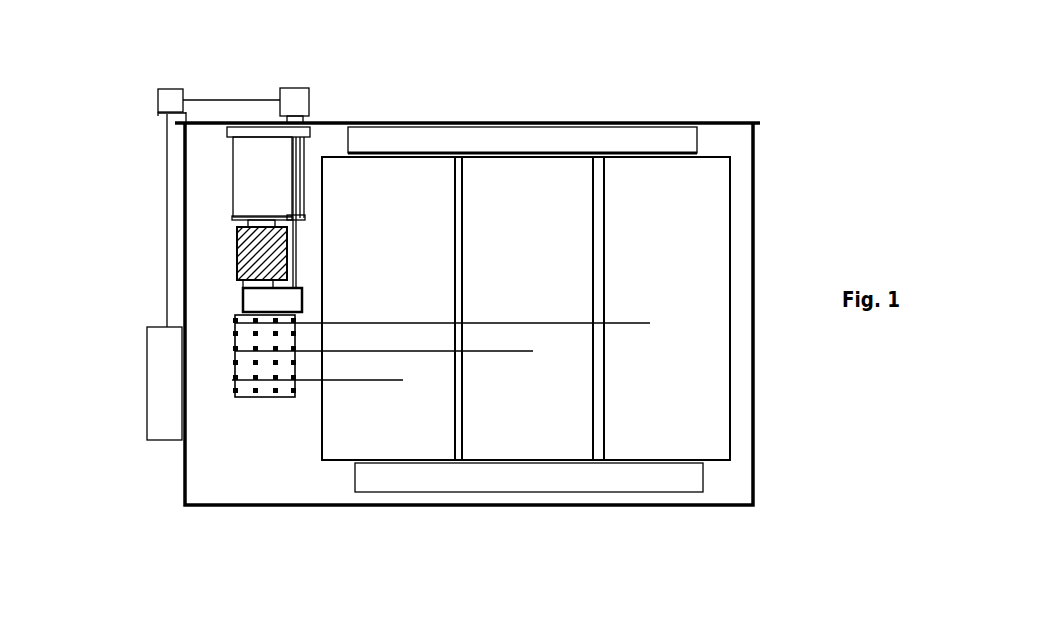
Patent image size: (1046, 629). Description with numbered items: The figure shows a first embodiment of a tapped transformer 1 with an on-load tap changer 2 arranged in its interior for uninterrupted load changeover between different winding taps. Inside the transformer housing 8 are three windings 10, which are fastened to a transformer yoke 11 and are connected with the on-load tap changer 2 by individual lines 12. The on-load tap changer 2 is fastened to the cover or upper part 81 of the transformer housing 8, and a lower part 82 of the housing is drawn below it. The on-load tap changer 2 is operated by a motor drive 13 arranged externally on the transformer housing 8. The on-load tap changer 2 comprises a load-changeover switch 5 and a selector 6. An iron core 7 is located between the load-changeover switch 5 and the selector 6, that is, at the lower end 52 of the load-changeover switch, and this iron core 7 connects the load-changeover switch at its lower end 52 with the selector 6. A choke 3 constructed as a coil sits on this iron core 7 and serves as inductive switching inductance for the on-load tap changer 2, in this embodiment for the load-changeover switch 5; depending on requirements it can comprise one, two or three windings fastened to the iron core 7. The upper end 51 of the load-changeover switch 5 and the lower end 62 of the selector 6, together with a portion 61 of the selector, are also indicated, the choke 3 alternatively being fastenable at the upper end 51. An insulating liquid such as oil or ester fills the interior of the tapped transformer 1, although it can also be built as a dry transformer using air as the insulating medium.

The tapped transformer 1 is at (773, 154).
The on-load tap changer 2 is at (317, 155).
The choke 3 is at (243, 272).
The load-changeover switch 5 is at (268, 185).
The upper end of the load-changeover switch 51 is at (272, 128).
The lower end of the load-changeover switch 52 is at (262, 215).
The selector 6 is at (275, 365).
The connector side wall 61 is at (235, 315).
The lower end of the selector 62 is at (288, 397).
The iron core 7 is at (267, 283).
The transformer housing 8 is at (427, 122).
The cover or upper part of the transformer housing 81 is at (358, 122).
The lower frame portion 82 is at (348, 507).
The windings 10 is at (663, 180).
The transformer yoke 11 is at (623, 478).
The individual lines 12 is at (558, 327).
The motor drive 13 is at (185, 377).